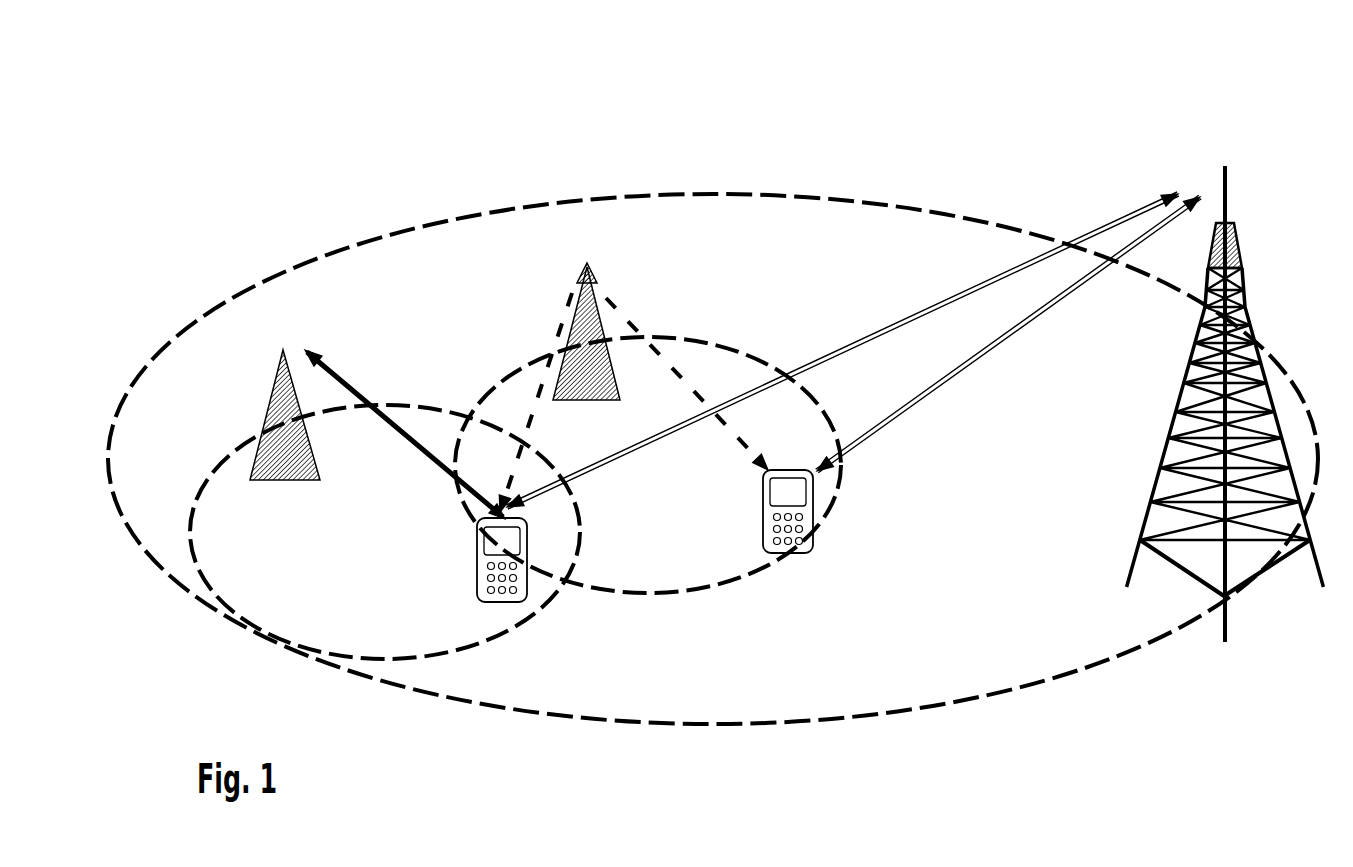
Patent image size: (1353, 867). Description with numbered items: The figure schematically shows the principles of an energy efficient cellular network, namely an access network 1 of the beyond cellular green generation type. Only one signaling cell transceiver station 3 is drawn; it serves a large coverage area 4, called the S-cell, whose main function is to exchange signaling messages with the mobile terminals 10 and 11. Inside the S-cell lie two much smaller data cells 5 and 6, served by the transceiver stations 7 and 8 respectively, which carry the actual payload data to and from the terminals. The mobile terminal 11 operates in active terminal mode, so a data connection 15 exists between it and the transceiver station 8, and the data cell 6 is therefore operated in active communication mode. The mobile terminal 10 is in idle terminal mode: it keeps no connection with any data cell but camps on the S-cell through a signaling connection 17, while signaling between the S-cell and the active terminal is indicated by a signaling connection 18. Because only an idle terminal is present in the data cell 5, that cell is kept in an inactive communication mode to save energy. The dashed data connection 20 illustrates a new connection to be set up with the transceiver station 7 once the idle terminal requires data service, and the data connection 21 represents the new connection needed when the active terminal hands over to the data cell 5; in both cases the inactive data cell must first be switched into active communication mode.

The access network 1 is at (290, 128).
The signaling cell transceiver station 3 is at (1243, 287).
The coverage area (S-cell) 4 is at (968, 218).
The data cell 5 is at (722, 586).
The data cell 6 is at (540, 613).
The transceiver station 7 is at (617, 378).
The transceiver station 8 is at (270, 383).
The mobile terminal 10 is at (813, 536).
The mobile terminal 11 is at (477, 580).
The data connection 15 is at (347, 385).
The signaling connection 17 is at (997, 345).
The signaling connection 18 is at (930, 310).
The data connection 20 is at (700, 383).
The data connection 21 is at (537, 417).